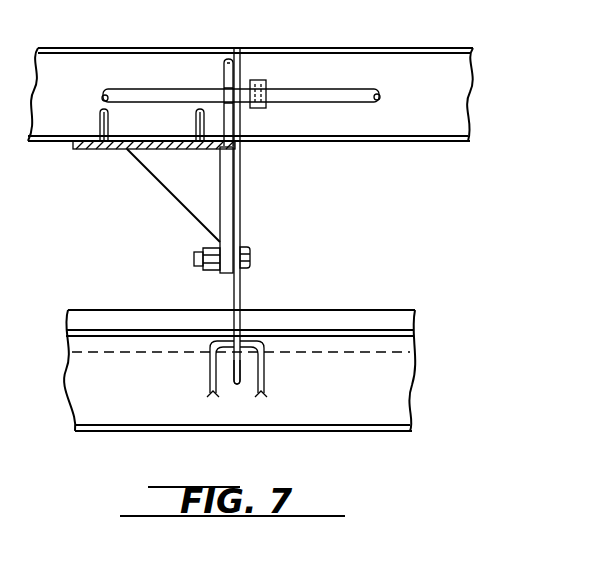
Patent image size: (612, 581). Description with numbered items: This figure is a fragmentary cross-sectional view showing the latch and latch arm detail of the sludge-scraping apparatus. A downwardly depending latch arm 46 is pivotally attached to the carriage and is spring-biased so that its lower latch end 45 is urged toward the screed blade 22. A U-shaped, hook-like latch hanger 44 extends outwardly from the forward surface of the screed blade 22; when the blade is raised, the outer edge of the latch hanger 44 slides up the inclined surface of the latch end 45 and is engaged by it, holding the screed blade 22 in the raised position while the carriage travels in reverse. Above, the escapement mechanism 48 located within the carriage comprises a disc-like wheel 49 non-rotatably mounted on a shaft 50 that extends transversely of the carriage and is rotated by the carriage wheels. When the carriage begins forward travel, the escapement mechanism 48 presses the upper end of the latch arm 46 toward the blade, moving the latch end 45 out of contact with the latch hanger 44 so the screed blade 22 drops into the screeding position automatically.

The screed blade 22 is at (124, 414).
The latch hanger 44 is at (210, 368).
The latch end 45 is at (237, 384).
The latch arm 46 is at (237, 296).
The escapement mechanism 48 is at (222, 72).
The disc-like wheel 49 is at (254, 121).
The shaft 50 is at (337, 96).